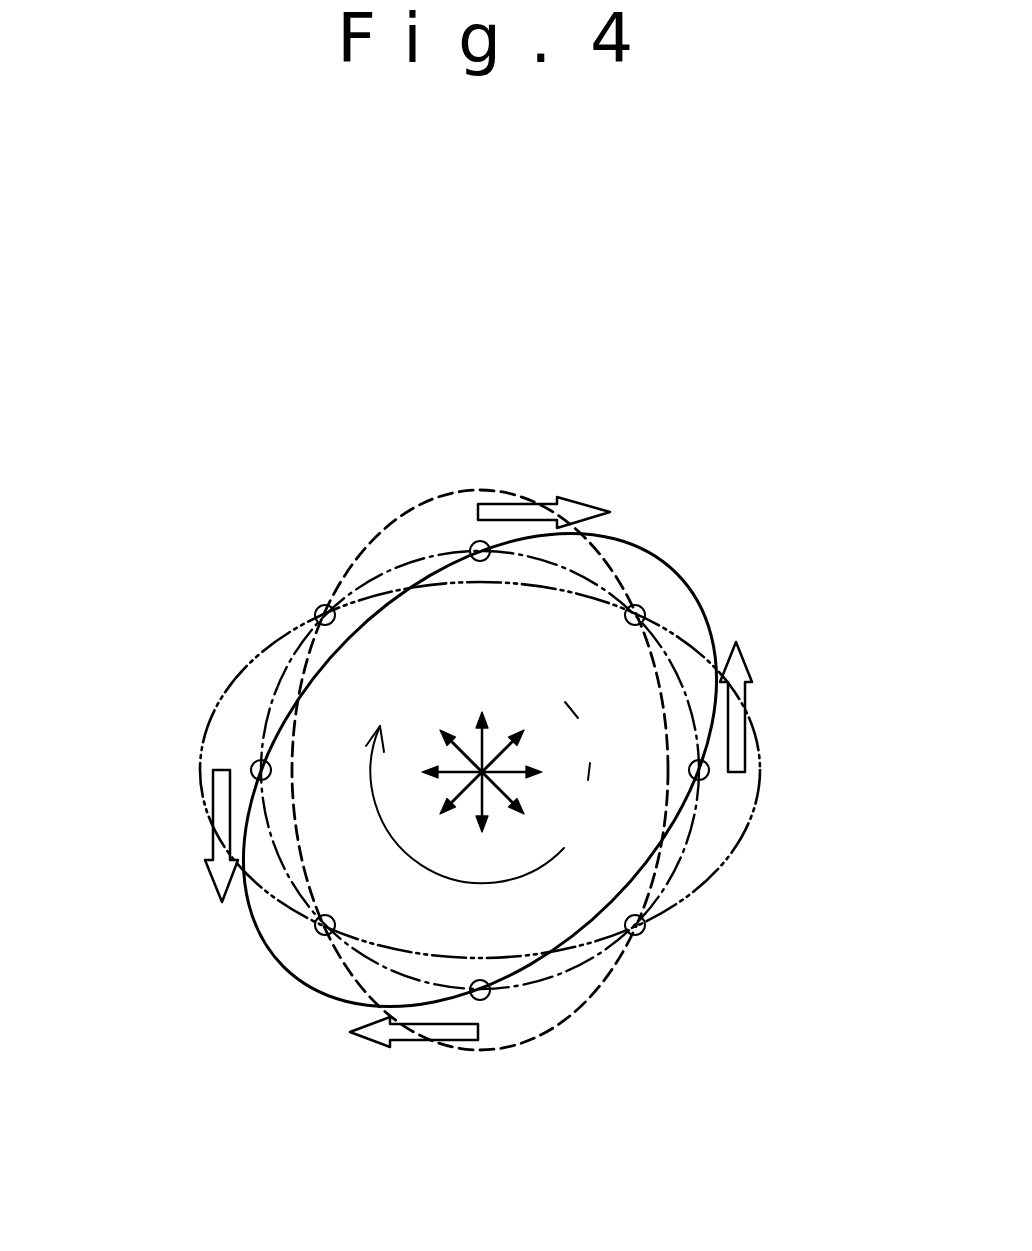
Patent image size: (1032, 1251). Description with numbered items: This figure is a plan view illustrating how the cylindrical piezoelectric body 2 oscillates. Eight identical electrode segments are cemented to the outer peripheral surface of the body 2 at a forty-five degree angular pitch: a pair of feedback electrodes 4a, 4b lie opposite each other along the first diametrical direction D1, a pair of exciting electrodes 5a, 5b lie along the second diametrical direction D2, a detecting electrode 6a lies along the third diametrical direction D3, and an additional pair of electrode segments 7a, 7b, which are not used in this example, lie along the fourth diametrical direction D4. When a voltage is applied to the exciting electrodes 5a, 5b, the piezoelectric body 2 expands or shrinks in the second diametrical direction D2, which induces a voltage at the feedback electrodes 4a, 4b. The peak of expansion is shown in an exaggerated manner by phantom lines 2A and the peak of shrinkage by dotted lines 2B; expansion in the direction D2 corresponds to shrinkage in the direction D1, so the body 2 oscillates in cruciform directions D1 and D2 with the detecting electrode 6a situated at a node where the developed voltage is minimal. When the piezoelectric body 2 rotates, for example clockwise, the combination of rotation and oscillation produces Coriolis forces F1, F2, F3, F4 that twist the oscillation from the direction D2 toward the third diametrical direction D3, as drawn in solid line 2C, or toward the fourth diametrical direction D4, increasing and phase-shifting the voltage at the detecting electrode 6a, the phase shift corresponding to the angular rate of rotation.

The cylindrical piezoelectric body 2 is at (350, 568).
The phantom lines 2A is at (447, 580).
The dotted lines 2B is at (487, 492).
The solid line 2C is at (673, 572).
The electrode segment (feedback electrode) 4a is at (477, 540).
The electrode segment (feedback electrode) 4b is at (487, 1002).
The electrode segment (exciting electrode) 5a is at (708, 775).
The electrode segment (exciting electrode) 5b is at (252, 765).
The electrode segment (detecting electrode) 6a is at (645, 610).
The electrode segment 7a is at (643, 935).
The electrode segment 7b is at (313, 613).
The Coriolis force F1 is at (557, 498).
The Coriolis force F2 is at (403, 1042).
The Coriolis force F3 is at (747, 702).
The Coriolis force F4 is at (213, 843).
The first diametrical direction D1 is at (480, 715).
The second diametrical direction D2 is at (537, 768).
The third diametrical direction D3 is at (513, 730).
The fourth diametrical direction D4 is at (523, 807).